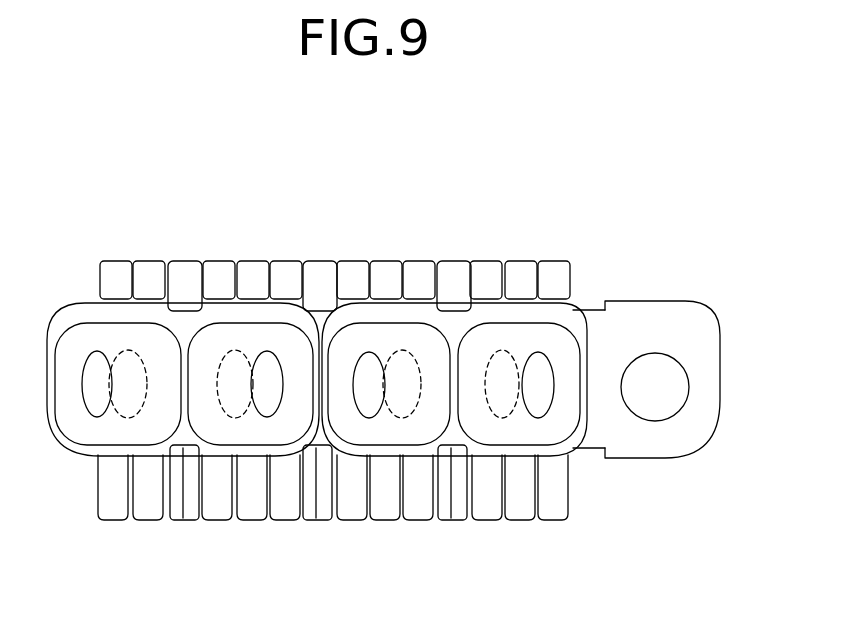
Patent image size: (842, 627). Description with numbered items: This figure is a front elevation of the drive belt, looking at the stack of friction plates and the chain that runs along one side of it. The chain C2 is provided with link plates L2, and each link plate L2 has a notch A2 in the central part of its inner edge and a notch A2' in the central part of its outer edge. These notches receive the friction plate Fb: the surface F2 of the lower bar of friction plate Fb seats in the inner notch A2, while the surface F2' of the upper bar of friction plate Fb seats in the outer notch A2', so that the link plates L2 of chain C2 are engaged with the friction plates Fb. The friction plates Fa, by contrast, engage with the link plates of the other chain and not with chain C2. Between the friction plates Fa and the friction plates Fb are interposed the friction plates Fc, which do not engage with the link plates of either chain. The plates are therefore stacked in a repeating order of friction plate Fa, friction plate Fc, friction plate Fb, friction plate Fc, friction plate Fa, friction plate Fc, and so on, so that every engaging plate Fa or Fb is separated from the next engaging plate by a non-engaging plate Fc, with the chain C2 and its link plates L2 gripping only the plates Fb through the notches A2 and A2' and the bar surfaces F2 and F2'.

The link plates L2 is at (97, 450).
The chain C2 is at (662, 312).
The surface of upper bar of friction plate Fb F2' is at (316, 266).
The notch A2' is at (422, 292).
The surface of lower bar of friction plate Fb F2 is at (327, 508).
The friction plate Fb is at (187, 518).
The notch A2 is at (411, 430).
The friction plate Fa is at (113, 518).
The friction plate Fc is at (147, 518).